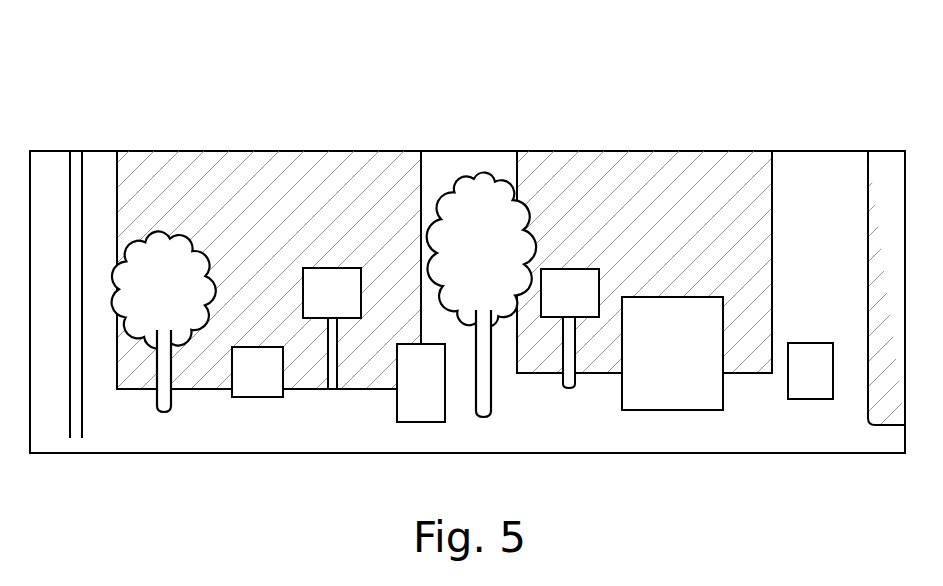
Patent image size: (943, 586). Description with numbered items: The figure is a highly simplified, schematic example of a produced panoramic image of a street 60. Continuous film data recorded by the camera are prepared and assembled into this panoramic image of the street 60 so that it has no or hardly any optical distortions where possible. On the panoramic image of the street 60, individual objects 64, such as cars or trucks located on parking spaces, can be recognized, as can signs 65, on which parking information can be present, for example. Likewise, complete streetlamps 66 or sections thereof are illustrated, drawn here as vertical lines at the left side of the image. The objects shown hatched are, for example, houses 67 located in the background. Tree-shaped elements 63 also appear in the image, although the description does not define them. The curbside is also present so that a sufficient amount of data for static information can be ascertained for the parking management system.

The panoramic image of a street 60 is at (463, 100).
The tree-shaped conductive via structure 63 is at (147, 302).
The individual objects 64 is at (242, 384).
The signs 65 is at (451, 328).
The streetlamps 66 is at (74, 157).
The houses 67 is at (666, 157).